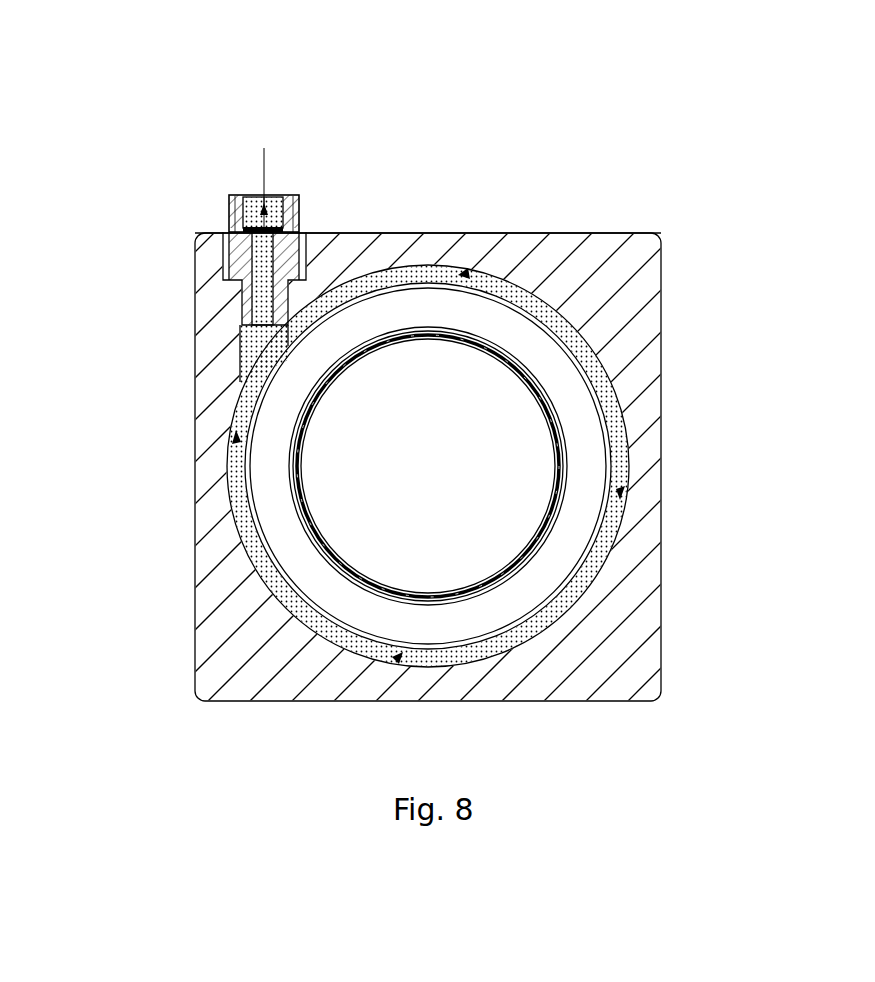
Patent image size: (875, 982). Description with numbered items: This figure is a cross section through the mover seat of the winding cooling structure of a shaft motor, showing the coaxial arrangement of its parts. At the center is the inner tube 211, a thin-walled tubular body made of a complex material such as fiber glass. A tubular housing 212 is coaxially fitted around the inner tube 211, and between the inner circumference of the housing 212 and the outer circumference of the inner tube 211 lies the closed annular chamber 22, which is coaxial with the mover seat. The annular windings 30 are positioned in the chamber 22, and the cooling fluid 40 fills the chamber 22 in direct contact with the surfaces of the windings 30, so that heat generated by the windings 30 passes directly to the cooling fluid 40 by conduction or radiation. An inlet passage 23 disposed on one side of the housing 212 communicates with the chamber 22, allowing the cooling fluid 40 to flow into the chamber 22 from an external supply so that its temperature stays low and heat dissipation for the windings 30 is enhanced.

The inlet passage 23 is at (243, 195).
The annular windings 30 is at (420, 308).
The annular chamber 22 is at (560, 255).
The tubular housing 212 is at (637, 333).
The cooling fluid 40 is at (622, 425).
The inner tube 211 is at (543, 542).